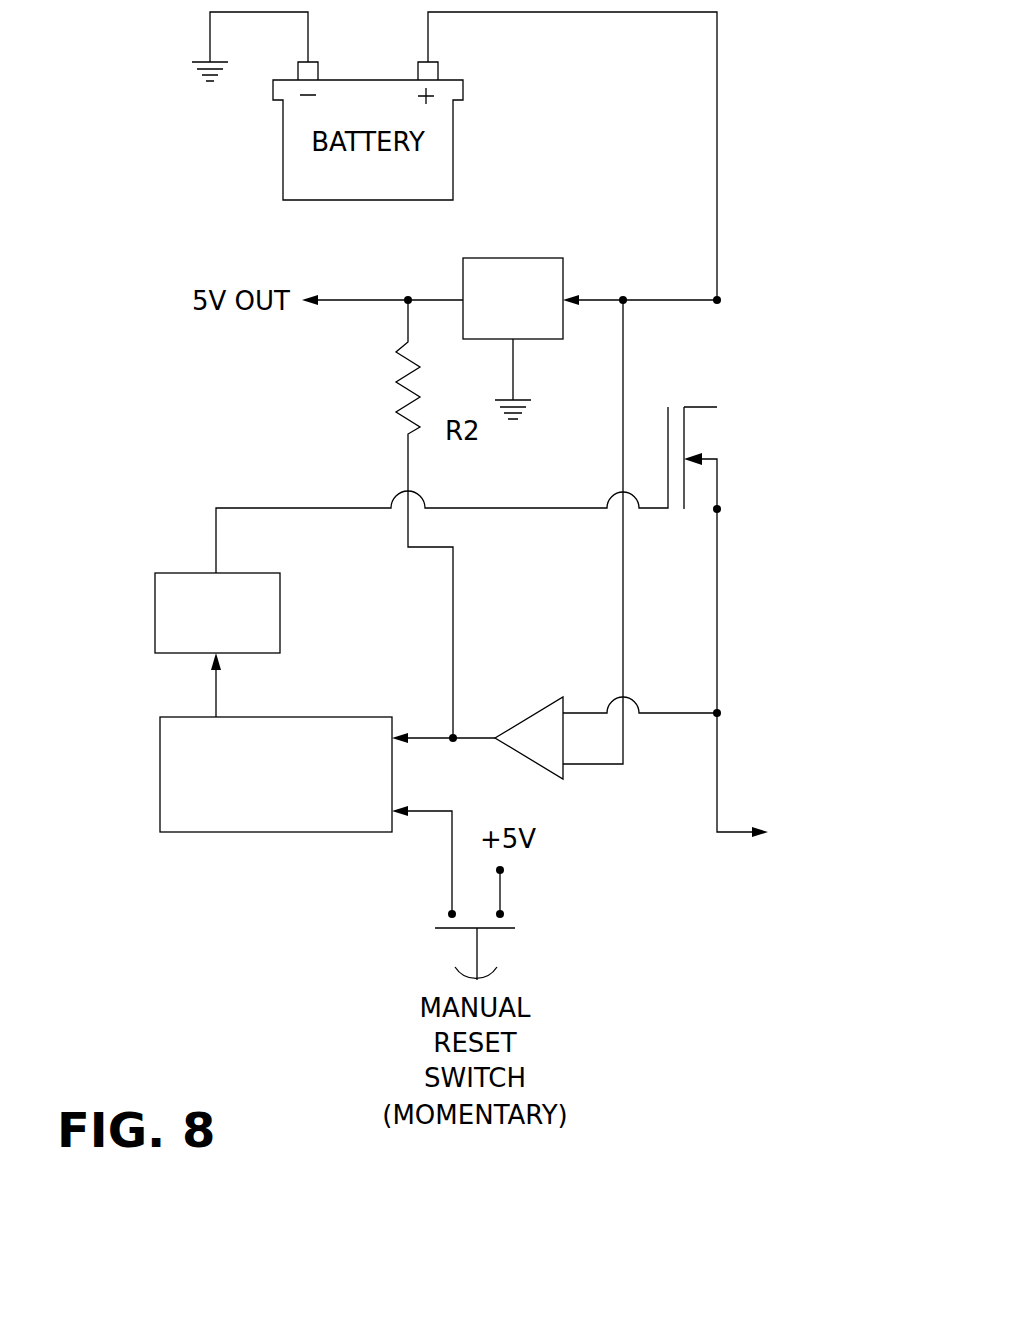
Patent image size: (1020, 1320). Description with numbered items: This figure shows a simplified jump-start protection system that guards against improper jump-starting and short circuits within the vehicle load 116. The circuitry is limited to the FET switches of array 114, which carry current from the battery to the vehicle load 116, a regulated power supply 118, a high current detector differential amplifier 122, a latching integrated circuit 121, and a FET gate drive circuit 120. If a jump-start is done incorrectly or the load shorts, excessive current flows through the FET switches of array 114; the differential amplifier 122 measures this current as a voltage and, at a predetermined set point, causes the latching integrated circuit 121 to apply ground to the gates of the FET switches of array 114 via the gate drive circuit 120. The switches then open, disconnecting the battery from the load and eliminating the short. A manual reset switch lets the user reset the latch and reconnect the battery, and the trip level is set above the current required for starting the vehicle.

The FET switch array 114 is at (684, 433).
The vehicle load 116 is at (740, 827).
The regulated power supply 118 is at (528, 258).
The FET gate drive circuit 120 is at (155, 590).
The latching integrated circuit 121 is at (158, 755).
The high current detector differential amplifier 122 is at (545, 770).